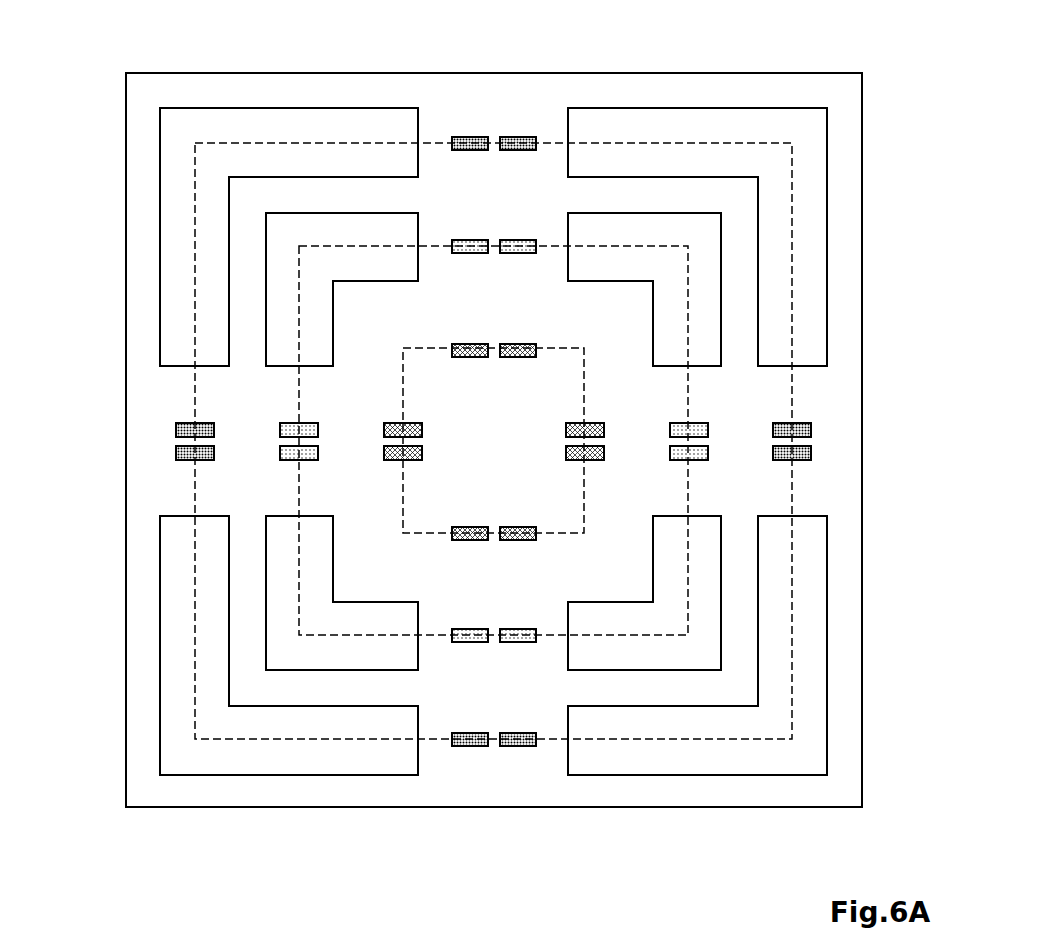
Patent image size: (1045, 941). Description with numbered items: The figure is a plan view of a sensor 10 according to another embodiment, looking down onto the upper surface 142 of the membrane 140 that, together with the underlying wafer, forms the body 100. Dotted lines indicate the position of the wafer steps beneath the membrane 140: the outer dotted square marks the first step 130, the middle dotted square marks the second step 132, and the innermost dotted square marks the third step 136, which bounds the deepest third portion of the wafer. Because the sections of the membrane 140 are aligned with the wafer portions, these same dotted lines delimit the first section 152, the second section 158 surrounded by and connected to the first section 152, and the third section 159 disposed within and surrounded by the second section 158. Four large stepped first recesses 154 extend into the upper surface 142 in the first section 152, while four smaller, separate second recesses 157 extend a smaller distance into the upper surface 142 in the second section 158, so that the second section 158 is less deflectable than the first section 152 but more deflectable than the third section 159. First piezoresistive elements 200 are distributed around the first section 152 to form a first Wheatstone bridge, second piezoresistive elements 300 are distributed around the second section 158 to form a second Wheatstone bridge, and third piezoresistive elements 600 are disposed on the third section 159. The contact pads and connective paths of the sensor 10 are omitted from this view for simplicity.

The sensor 10 is at (873, 28).
The body 100 is at (127, 106).
The first step 130 is at (195, 176).
The second step 132 is at (299, 295).
The third step 136 is at (585, 461).
The membrane 140 is at (848, 134).
The upper surface 142 is at (812, 90).
The first section 152 is at (744, 503).
The first recesses 154 is at (150, 199).
The second recesses 157 is at (289, 202).
The second section 158 is at (609, 340).
The third section 159 is at (550, 480).
The first piezoresistive elements 200 is at (517, 135).
The second piezoresistive elements 300 is at (471, 235).
The third piezoresistive elements 600 is at (471, 338).